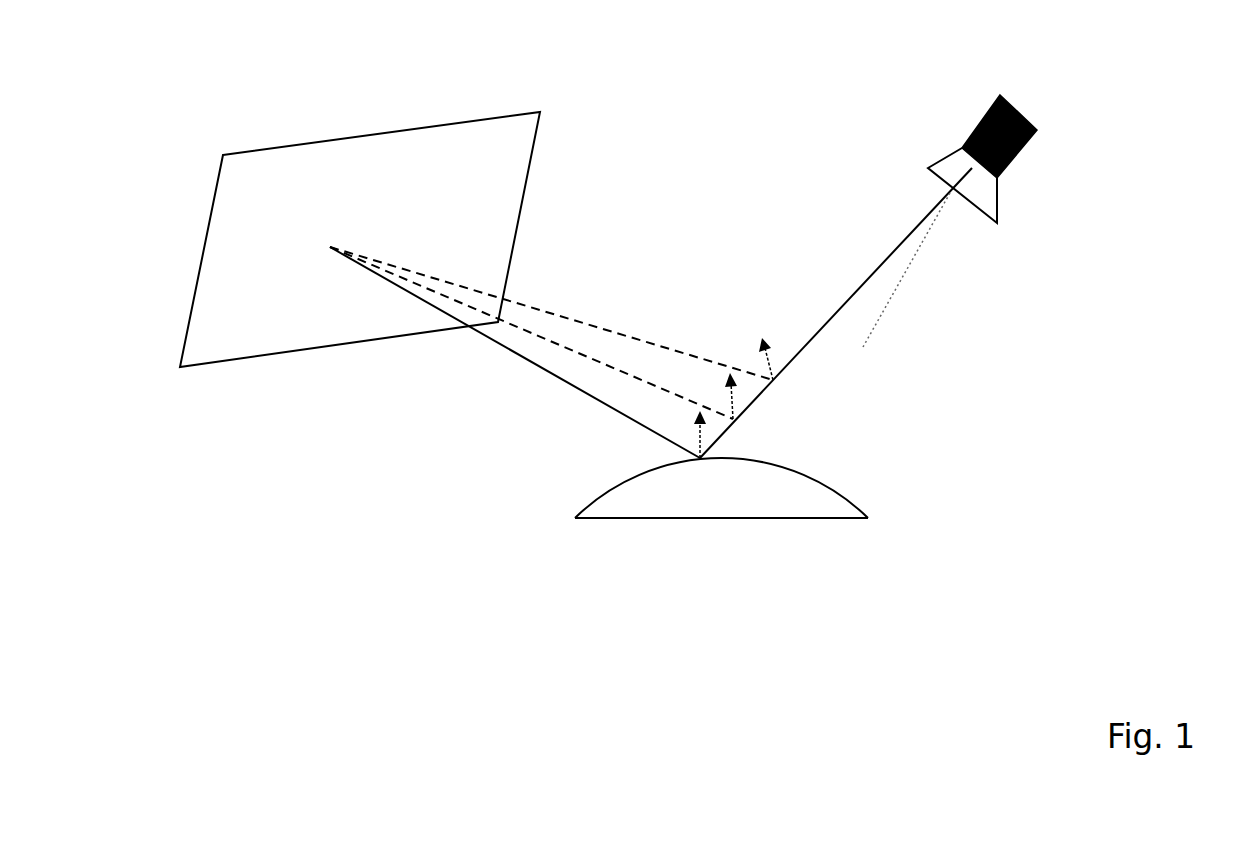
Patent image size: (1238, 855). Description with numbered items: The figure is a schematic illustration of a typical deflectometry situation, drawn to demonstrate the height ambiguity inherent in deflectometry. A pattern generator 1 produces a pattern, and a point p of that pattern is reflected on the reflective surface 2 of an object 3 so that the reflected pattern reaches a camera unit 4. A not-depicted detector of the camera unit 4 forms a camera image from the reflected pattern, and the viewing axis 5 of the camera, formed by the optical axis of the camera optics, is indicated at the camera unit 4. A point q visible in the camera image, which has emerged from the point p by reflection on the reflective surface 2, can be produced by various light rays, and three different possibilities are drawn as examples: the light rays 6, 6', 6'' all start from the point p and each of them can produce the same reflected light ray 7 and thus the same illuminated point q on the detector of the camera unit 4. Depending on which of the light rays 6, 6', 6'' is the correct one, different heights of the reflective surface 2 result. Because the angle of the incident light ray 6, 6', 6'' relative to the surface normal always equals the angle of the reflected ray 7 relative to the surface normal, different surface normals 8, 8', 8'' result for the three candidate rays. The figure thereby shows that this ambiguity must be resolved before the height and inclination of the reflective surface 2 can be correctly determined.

The pattern generator 1 is at (340, 175).
The point of the pattern p is at (317, 237).
The reflective surface 2 is at (826, 476).
The object 3 is at (728, 505).
The camera unit 4 is at (1008, 100).
The viewing axis of the camera 5 is at (917, 267).
The light ray 6 is at (515, 352).
The light ray 6' is at (531, 323).
The light ray 6'' is at (551, 303).
The reflected light ray 7 is at (825, 330).
The surface normal 8 is at (647, 434).
The surface normal 8' is at (702, 323).
The surface normal 8'' is at (767, 303).